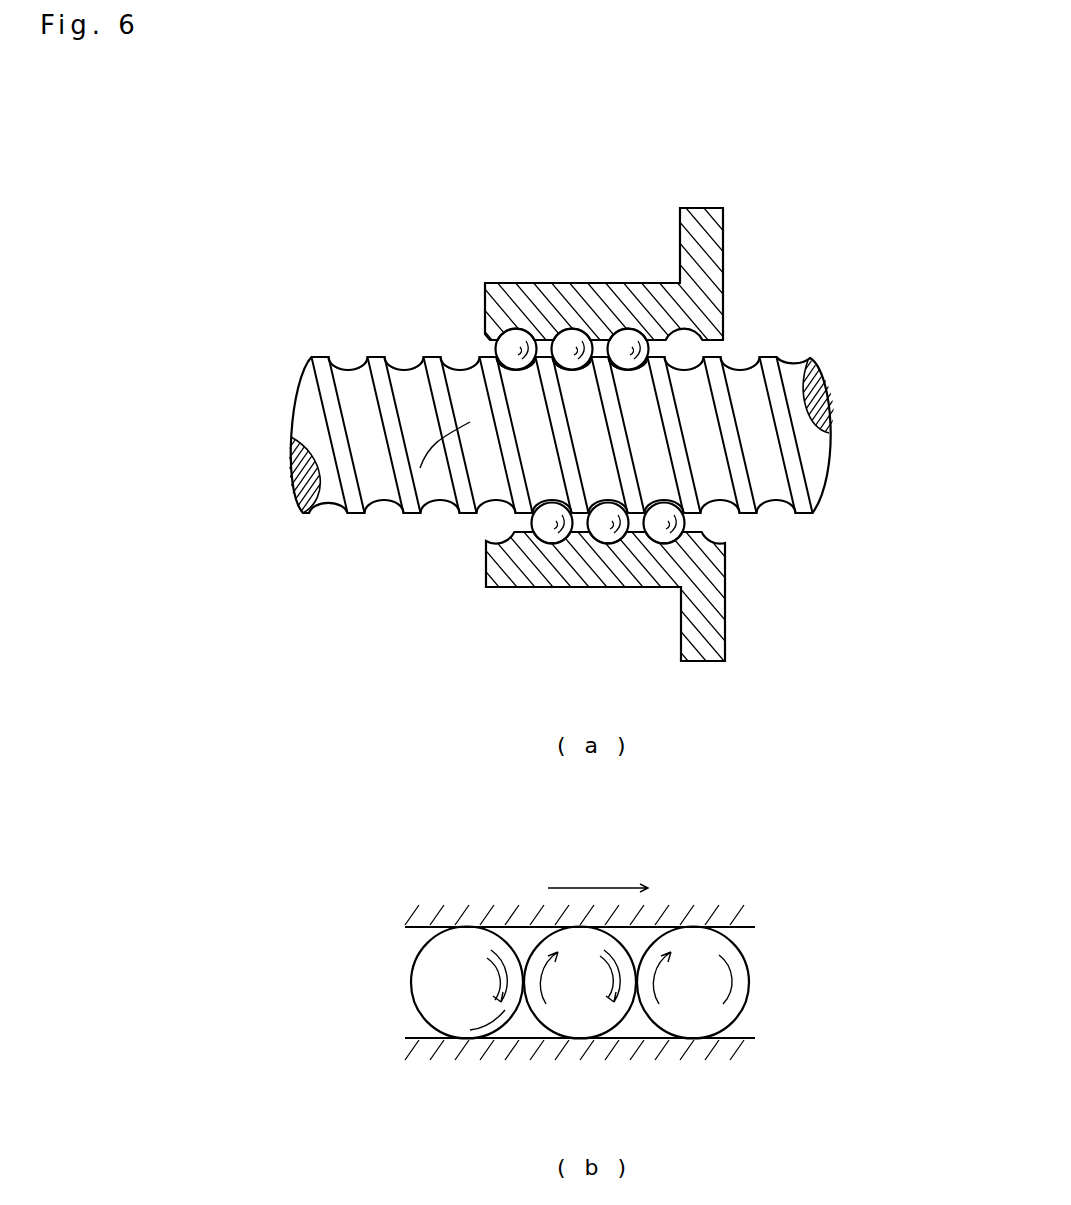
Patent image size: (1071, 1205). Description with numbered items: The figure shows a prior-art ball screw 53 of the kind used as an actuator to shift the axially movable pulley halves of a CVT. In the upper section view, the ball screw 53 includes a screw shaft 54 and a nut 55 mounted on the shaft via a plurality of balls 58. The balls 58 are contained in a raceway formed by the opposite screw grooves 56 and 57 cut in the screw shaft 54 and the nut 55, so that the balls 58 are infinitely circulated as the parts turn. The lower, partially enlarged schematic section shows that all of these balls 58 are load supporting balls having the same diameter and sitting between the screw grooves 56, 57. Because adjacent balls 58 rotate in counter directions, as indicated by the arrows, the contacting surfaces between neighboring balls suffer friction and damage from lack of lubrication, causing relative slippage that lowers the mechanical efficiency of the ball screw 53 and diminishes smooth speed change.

The ball screw 53 is at (378, 356).
The screw shaft 54 is at (373, 513).
The nut 55 is at (562, 290).
The screw groove 56 is at (433, 512).
The screw groove 57 is at (516, 345).
The balls 58 is at (553, 527).